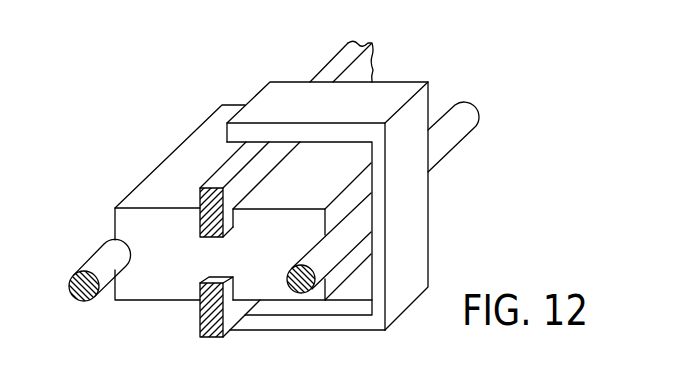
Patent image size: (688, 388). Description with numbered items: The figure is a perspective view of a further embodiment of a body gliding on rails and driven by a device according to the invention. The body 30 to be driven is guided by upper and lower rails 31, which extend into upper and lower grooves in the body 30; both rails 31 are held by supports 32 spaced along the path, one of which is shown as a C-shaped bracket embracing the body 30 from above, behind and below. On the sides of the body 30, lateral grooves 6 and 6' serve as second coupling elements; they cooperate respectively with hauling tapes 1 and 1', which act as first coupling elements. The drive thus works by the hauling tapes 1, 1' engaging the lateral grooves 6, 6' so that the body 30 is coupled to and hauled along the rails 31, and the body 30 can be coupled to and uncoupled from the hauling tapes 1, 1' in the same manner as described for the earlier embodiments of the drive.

The body 30 is at (180, 177).
The rails 31 is at (332, 70).
The support 32 is at (407, 208).
The lateral groove 6 is at (89, 265).
The hauling tape 1 is at (74, 315).
The lateral groove 6' is at (335, 281).
The hauling tape 1' is at (285, 317).